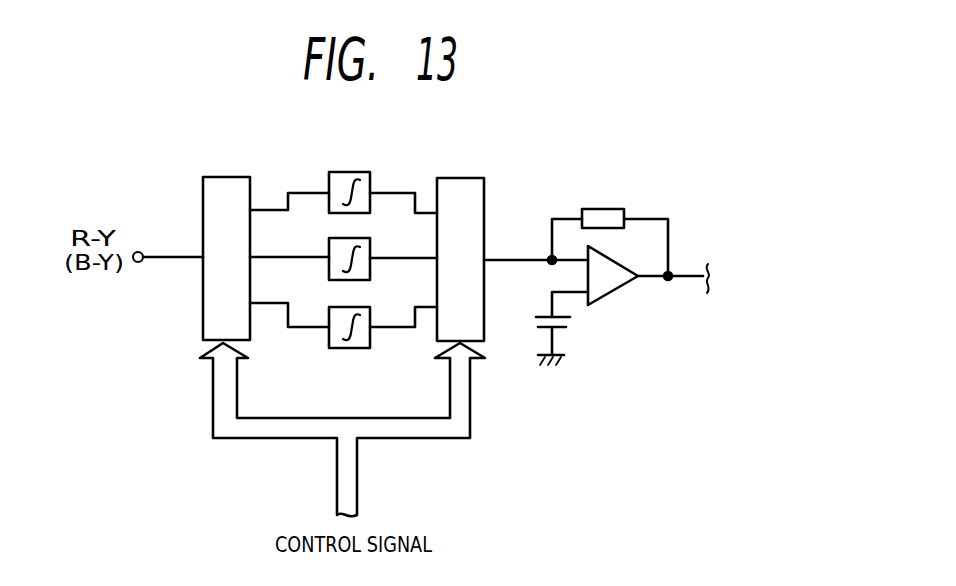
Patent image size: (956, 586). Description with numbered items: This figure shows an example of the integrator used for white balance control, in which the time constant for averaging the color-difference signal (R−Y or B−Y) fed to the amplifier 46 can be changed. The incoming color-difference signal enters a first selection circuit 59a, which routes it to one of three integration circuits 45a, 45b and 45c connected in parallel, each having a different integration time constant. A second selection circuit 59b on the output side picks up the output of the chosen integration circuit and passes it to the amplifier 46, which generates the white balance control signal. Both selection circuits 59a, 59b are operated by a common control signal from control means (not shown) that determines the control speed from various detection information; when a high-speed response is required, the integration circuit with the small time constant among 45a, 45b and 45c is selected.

The selection circuit 59a is at (240, 176).
The selection circuit 59b is at (480, 176).
The integration circuit 45a is at (373, 178).
The integration circuit 45b is at (371, 248).
The integration circuit 45c is at (372, 313).
The amplifier 46 is at (627, 291).